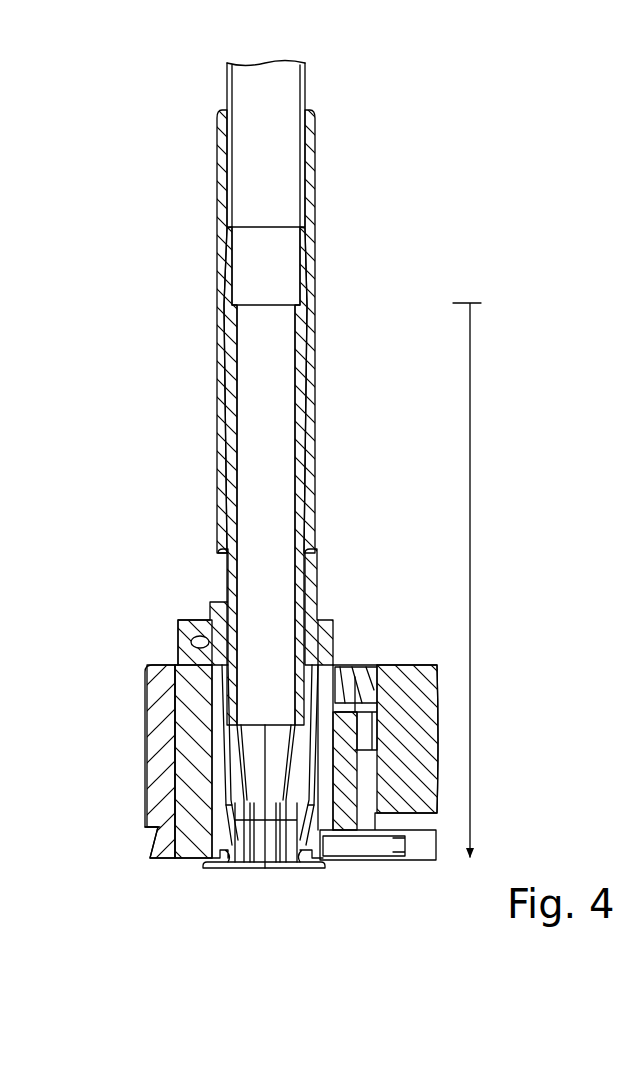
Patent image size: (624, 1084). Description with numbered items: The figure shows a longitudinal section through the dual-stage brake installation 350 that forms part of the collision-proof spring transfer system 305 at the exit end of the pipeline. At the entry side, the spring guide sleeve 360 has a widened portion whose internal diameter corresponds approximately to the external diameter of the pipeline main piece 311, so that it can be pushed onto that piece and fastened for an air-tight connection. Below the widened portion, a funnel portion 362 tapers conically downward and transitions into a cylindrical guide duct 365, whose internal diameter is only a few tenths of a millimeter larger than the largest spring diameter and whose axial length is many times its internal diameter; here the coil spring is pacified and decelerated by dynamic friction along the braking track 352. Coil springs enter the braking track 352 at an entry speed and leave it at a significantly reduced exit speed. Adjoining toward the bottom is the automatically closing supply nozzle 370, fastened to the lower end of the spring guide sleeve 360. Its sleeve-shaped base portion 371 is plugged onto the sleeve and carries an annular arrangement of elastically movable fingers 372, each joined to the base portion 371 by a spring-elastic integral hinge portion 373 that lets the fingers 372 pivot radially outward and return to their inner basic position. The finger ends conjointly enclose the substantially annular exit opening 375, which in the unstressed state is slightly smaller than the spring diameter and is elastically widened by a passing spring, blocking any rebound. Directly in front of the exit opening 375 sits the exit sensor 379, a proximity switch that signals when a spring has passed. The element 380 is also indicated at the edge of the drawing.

The spring transfer system 305 is at (165, 122).
The pipeline main piece 311 is at (305, 68).
The brake installation 350 is at (425, 180).
The braking track 352 is at (470, 398).
The spring guide sleeve 360 is at (305, 340).
The funnel portion 362 is at (275, 262).
The guide duct 365 is at (275, 452).
The supply nozzle 370 is at (228, 793).
The base portion 371 is at (200, 652).
The fingers 372 is at (228, 748).
The integral hinge portion 373 is at (225, 690).
The exit opening 375 is at (248, 874).
The exit sensor 379 is at (385, 848).
The holder 380 is at (623, 512).